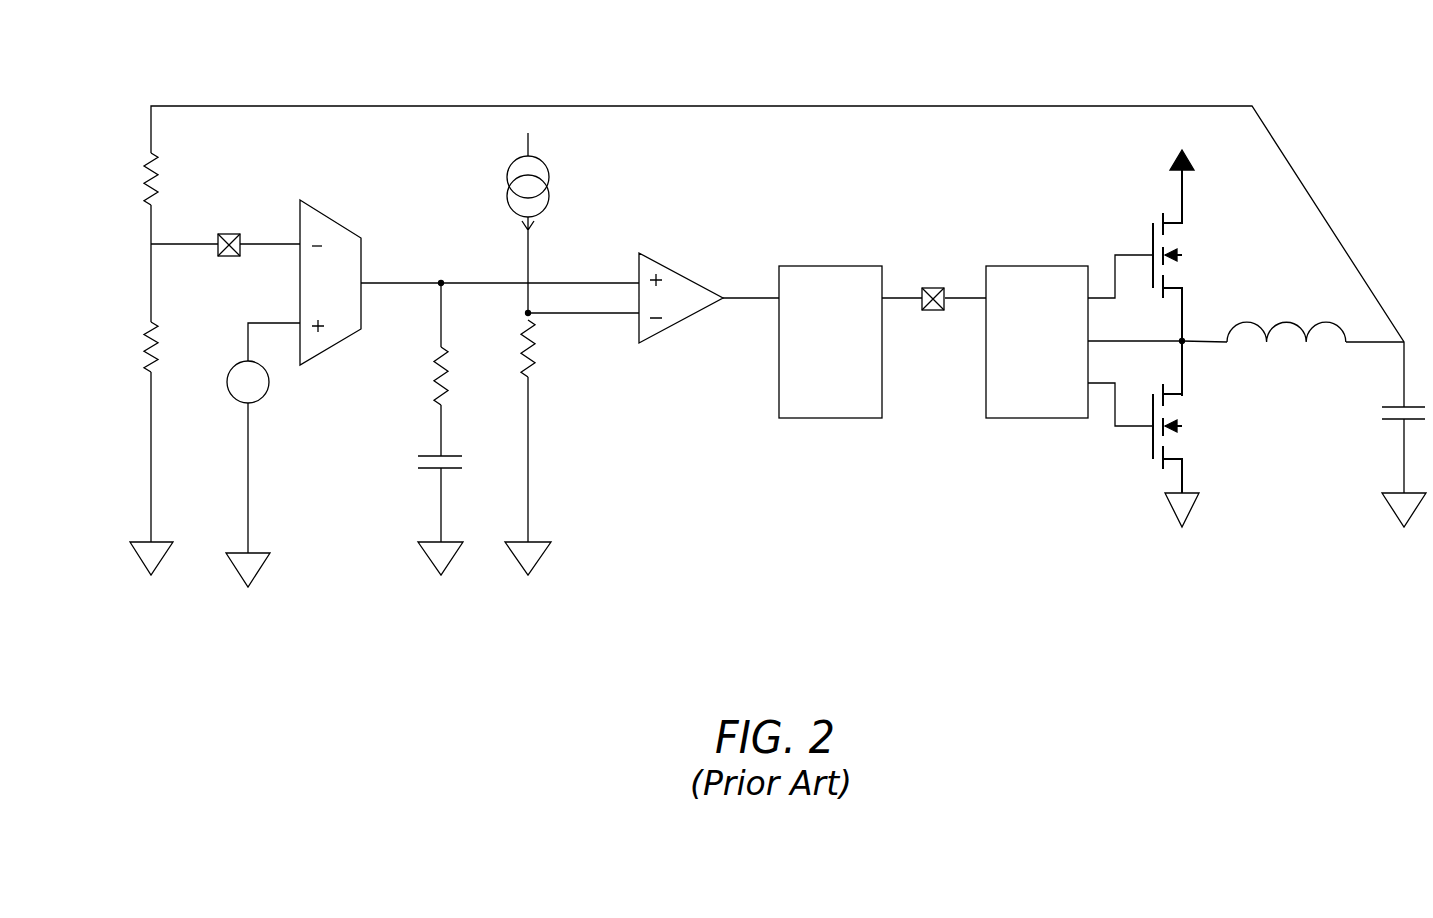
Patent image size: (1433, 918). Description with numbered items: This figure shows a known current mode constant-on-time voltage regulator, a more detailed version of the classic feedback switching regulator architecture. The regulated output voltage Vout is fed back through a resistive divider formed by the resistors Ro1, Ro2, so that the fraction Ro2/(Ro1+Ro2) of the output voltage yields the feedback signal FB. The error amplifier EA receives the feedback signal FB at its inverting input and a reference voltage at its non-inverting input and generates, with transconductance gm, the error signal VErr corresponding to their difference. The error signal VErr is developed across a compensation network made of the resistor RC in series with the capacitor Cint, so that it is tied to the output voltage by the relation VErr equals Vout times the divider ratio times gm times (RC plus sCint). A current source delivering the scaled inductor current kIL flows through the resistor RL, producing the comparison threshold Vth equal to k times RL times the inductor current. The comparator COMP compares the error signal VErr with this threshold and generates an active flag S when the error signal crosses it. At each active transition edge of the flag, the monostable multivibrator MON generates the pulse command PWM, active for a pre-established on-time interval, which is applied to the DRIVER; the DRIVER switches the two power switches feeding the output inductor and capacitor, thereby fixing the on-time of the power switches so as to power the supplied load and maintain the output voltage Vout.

The resistor Ro1 is at (125, 179).
The resistor Ro2 is at (125, 347).
The feedback signal FB is at (225, 231).
The error amplifier EA is at (330, 271).
The error signal VErr is at (500, 268).
The compensation resistor RC is at (414, 376).
The integration capacitor Cint is at (420, 473).
The scaled inductor current kIL is at (557, 223).
The threshold resistor RL is at (551, 355).
The comparator COMP is at (681, 313).
The monostable multivibrator MON is at (846, 312).
The PWM signal PWM is at (934, 285).
The driver DRIVER is at (1037, 342).
The regulated output voltage Vout is at (1374, 433).